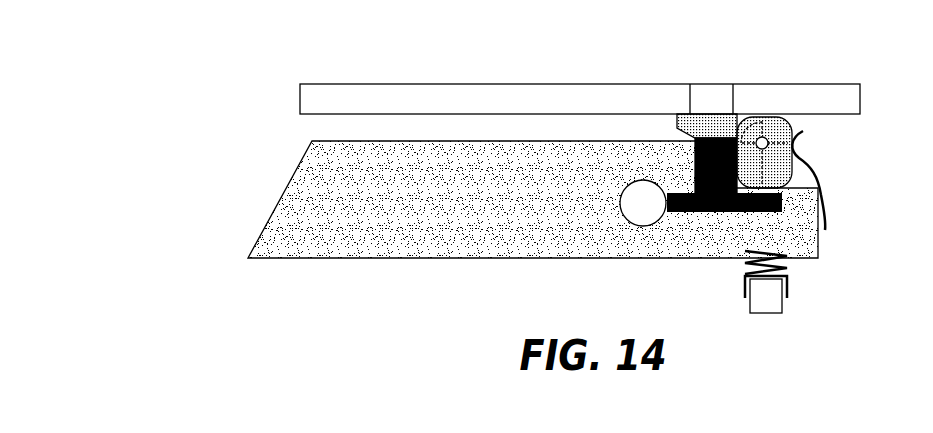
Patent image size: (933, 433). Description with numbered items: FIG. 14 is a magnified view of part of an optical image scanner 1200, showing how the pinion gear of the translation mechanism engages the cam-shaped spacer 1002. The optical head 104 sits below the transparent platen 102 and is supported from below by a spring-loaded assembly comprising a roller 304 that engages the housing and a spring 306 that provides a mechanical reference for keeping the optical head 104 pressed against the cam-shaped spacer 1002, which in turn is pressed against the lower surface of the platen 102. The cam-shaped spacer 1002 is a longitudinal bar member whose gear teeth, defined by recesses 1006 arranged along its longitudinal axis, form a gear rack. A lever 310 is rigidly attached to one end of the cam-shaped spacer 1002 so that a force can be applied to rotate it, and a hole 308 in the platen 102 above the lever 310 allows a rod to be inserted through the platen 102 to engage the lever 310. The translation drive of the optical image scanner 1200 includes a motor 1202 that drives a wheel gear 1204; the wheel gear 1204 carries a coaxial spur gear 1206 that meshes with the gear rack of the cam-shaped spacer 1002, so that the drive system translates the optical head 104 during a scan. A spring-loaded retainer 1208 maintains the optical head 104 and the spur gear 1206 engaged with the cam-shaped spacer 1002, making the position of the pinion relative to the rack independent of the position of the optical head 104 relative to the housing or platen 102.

The transparent platen 102 is at (508, 84).
The optical head 104 is at (367, 259).
The hole 308 is at (700, 84).
The lever 310 is at (677, 128).
The recesses 1006 is at (750, 120).
The cam-shaped spacer 1002 is at (799, 101).
The coaxial spur gear 1206 is at (695, 160).
The wheel gear 1204 is at (685, 212).
The spring-loaded retainer 1208 is at (812, 168).
The motor 1202 is at (620, 203).
The roller 304 is at (767, 313).
The spring 306 is at (805, 290).
The optical image scanner 1200 is at (192, 281).